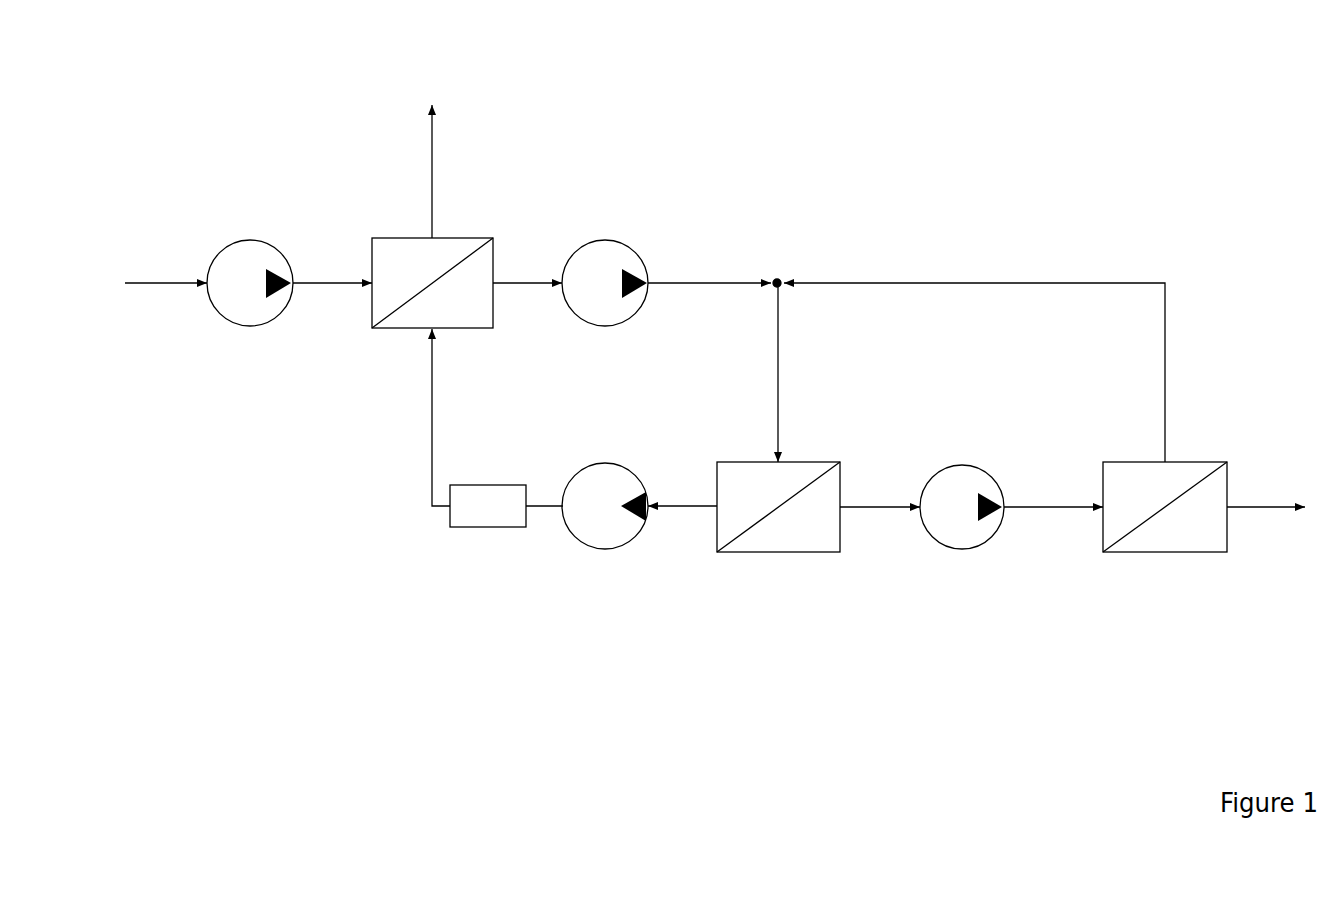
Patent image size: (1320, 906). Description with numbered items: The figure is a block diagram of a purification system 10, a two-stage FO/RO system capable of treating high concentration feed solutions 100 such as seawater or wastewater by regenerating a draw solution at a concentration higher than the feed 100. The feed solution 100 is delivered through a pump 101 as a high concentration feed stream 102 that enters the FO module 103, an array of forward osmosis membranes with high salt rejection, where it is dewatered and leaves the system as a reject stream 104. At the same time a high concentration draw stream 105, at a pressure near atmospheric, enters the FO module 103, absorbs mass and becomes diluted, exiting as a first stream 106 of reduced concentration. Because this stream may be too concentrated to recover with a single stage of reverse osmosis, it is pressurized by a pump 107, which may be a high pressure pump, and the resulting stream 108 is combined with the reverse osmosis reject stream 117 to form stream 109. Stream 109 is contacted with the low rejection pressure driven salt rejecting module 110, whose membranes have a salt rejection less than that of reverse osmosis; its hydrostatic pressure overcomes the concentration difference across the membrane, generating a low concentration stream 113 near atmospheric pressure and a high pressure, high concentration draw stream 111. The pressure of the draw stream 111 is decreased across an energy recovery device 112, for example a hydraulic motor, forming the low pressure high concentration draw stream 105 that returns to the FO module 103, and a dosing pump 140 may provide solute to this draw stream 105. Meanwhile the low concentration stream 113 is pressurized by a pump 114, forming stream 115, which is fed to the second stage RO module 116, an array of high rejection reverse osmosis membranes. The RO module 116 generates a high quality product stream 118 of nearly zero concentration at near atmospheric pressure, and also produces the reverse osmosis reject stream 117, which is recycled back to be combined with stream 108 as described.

The purification system 10 is at (1160, 40).
The feed solution 100 is at (153, 274).
The feed pump 101 is at (250, 232).
The high concentration feed stream 102 is at (323, 274).
The FO module 103 is at (395, 235).
The reject stream 104 is at (436, 152).
The high concentration draw stream 105 is at (419, 477).
The first stream 106 is at (520, 278).
The pump 107 is at (605, 235).
The stream 108 is at (695, 278).
The stream 109 is at (783, 343).
The low rejection pressure driven salt rejecting module 110 is at (737, 455).
The high concentration draw stream 111 is at (680, 513).
The energy recovery device 112 is at (605, 455).
The low concentration stream 113 is at (878, 513).
The pump 114 is at (962, 455).
The stream 115 is at (1038, 498).
The RO module 116 is at (1128, 455).
The reverse osmosis reject stream 117 is at (1169, 365).
The product stream 118 is at (1250, 497).
The dosing pump 140 is at (493, 534).